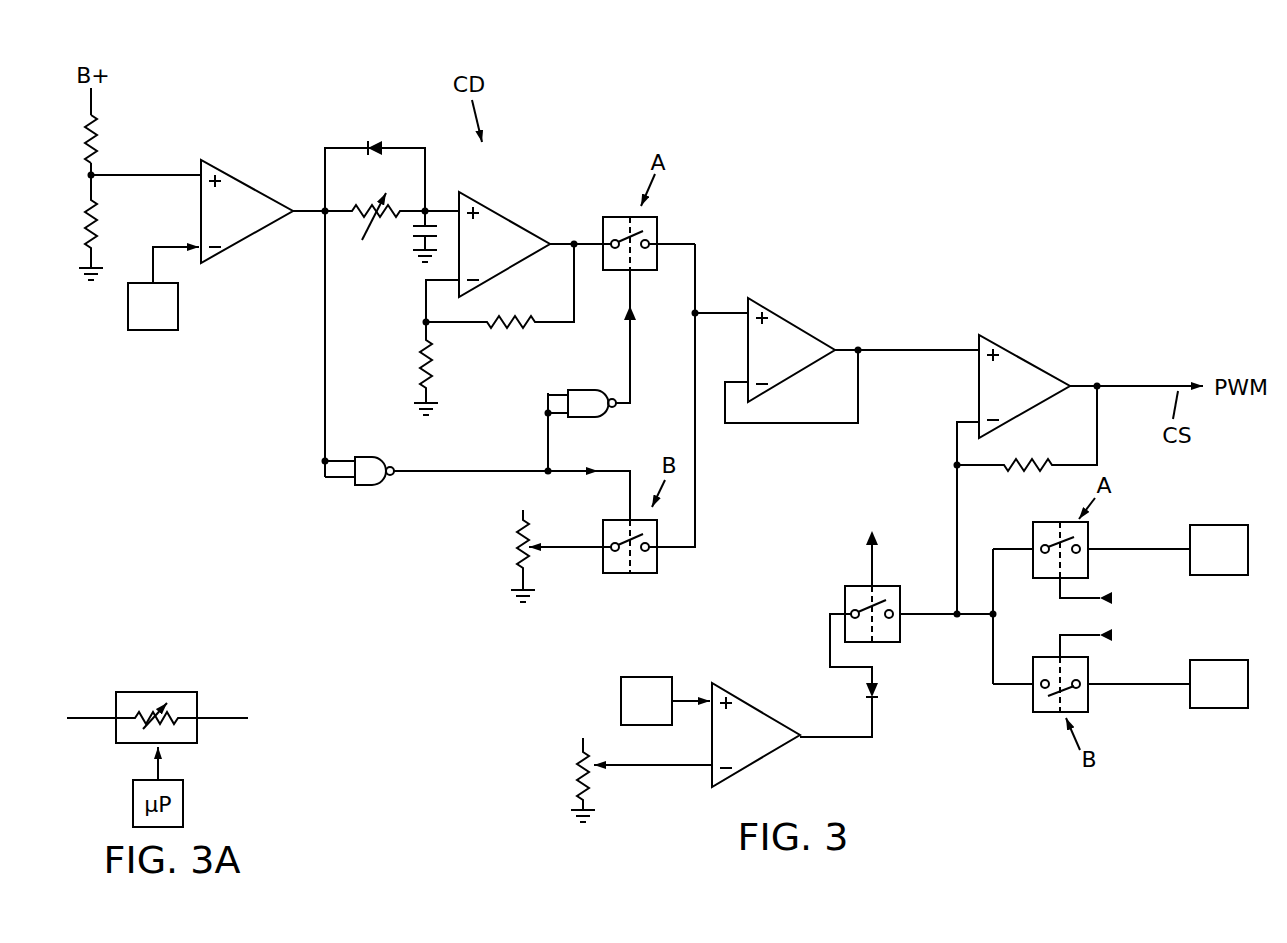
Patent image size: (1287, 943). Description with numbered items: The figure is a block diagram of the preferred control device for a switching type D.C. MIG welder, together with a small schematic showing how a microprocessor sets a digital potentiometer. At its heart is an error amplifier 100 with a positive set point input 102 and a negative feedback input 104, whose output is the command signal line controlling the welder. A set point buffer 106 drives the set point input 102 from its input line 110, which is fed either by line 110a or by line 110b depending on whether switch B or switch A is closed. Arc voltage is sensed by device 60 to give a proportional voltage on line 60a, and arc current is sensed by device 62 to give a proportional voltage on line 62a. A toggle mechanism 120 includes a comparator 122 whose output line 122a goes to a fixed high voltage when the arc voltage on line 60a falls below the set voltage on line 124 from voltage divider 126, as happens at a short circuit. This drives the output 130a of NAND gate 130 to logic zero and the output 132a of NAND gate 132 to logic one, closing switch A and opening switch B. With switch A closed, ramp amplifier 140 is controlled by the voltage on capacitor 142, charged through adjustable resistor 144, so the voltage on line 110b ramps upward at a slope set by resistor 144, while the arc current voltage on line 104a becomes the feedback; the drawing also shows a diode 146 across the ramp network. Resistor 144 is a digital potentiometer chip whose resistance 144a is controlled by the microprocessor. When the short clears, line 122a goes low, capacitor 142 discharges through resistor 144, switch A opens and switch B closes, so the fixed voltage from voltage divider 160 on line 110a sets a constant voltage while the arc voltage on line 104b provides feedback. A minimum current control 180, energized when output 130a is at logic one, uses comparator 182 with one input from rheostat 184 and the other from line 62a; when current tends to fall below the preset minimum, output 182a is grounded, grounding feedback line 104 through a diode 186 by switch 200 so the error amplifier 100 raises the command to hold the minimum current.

In FIG. 3, the arc voltage sensing device 60 is at (147, 333).
In FIG. 3, the arc voltage feedback line 60a is at (166, 246).
In FIG. 3, the arc current sensing device 62 is at (633, 675).
In FIG. 3, the arc current feedback line 62a is at (688, 698).
In FIG. 3, the error amplifier 100 is at (1018, 351).
In FIG. 3, the positive set point input 102 is at (941, 347).
In FIG. 3, the negative feedback input 104 is at (956, 438).
In FIG. 3, the arc current feedback line 104a is at (1003, 547).
In FIG. 3, the arc voltage feedback line 104b is at (1012, 688).
In FIG. 3, the set point buffer 106 is at (796, 320).
In FIG. 3, the buffer input line 110 is at (722, 312).
In FIG. 3, the fixed set point input line 110a is at (698, 500).
In FIG. 3, the ramped set point input line 110b is at (686, 242).
In FIG. 3, the toggle mechanism 120 is at (247, 170).
In FIG. 3, the comparator 122 is at (228, 170).
In FIG. 3, the comparator output line 122a is at (301, 218).
In FIG. 3, the set voltage line 124 is at (131, 174).
In FIG. 3, the voltage divider 126 is at (91, 175).
In FIG. 3, the NAND gate 130 is at (371, 488).
In FIG. 3, the NAND gate output 130a is at (618, 468).
In FIG. 3, the NAND gate 132 is at (580, 388).
In FIG. 3, the NAND gate output 132a is at (633, 348).
In FIG. 3, the ramp amplifier 140 is at (498, 207).
In FIG. 3, the capacitor 142 is at (414, 233).
In FIG. 3, the adjustable resistor 144 is at (375, 227).
In FIG. 3A, the digital potentiometer resistance 144a is at (148, 712).
In FIG. 3, the diode 146 is at (377, 145).
In FIG. 3, the voltage divider rheostat 160 is at (520, 550).
In FIG. 3, the minimum current control 180 is at (737, 690).
In FIG. 3, the minimum current comparator 182 is at (758, 705).
In FIG. 3, the comparator output 182a is at (828, 739).
In FIG. 3, the minimum current rheostat 184 is at (577, 783).
In FIG. 3, the diode 186 is at (882, 690).
In FIG. 3, the switch 200 is at (889, 583).